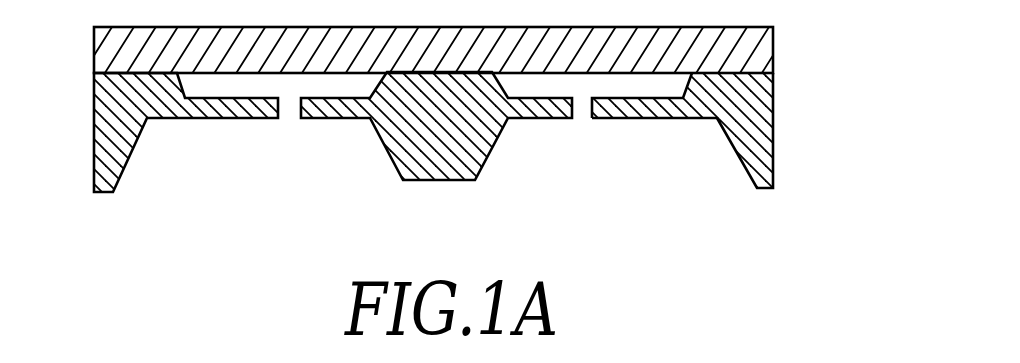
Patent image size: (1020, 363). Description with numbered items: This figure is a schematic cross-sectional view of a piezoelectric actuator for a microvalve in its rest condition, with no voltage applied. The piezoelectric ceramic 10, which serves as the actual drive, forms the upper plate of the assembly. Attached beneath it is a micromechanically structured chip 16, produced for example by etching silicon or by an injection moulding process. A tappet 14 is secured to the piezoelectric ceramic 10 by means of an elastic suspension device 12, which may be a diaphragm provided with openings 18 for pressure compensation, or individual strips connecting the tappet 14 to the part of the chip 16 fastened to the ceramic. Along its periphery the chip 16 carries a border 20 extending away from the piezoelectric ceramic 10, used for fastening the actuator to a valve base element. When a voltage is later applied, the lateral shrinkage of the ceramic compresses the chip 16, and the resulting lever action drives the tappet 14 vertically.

The piezoelectric ceramic 10 is at (750, 42).
The suspension device 12 is at (675, 105).
The tappet 14 is at (493, 152).
The micromechanically structured chip 16 is at (767, 110).
The openings 18 is at (290, 110).
The border 20 is at (118, 150).